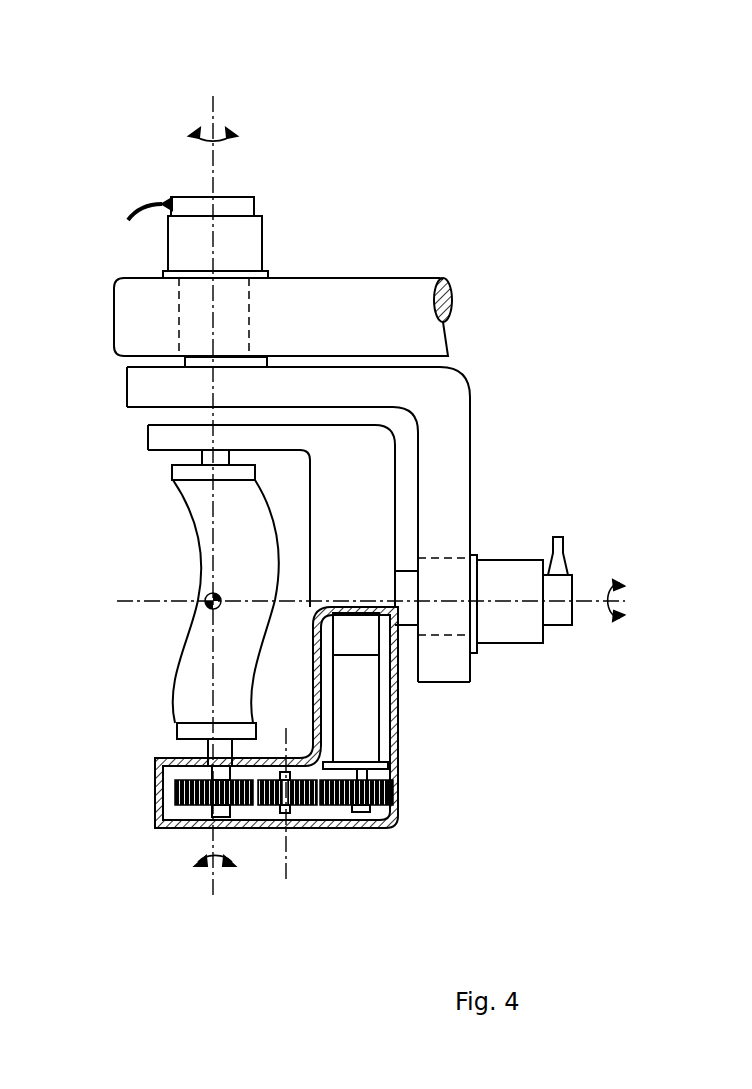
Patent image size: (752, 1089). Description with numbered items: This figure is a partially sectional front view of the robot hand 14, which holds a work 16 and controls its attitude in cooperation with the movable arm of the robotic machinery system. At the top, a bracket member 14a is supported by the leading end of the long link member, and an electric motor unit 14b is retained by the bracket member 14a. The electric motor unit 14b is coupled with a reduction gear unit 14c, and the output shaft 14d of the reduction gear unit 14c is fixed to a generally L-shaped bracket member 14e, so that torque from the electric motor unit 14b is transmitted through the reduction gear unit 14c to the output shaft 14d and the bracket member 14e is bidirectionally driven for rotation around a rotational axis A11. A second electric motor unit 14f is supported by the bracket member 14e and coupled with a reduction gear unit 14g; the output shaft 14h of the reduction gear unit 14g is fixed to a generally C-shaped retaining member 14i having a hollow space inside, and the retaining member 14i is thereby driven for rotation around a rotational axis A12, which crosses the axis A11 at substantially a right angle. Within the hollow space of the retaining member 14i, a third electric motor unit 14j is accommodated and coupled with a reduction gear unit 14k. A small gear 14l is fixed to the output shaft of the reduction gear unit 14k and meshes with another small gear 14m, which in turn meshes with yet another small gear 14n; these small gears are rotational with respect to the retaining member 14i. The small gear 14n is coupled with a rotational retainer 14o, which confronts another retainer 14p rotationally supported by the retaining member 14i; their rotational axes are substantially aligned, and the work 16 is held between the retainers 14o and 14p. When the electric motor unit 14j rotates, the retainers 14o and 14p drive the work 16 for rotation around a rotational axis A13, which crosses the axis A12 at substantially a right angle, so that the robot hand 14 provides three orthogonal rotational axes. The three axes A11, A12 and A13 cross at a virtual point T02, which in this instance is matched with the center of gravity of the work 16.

The robot hand 14 is at (452, 140).
The bracket member 14a is at (392, 290).
The electric motor unit 14b is at (252, 203).
The reduction gear unit 14c is at (178, 300).
The output shaft 14d is at (185, 360).
The L-shaped bracket member 14e is at (462, 409).
The second electric motor unit 14f is at (512, 568).
The reduction gear unit 14g is at (441, 636).
The output shaft 14h is at (418, 682).
The C-shaped retaining member 14i is at (383, 486).
The third electric motor unit 14j is at (345, 638).
The reduction gear unit 14k is at (397, 757).
The small gear 14l is at (340, 807).
The small gear 14m is at (308, 806).
The small gear 14n is at (185, 806).
The rotational retainer 14o is at (205, 740).
The retainer 14p is at (202, 456).
The work 16 is at (196, 545).
The virtual point T02 is at (208, 606).
The rotational axis A11 is at (209, 124).
The rotational axis A12 is at (585, 603).
The rotational axis A13 is at (213, 893).